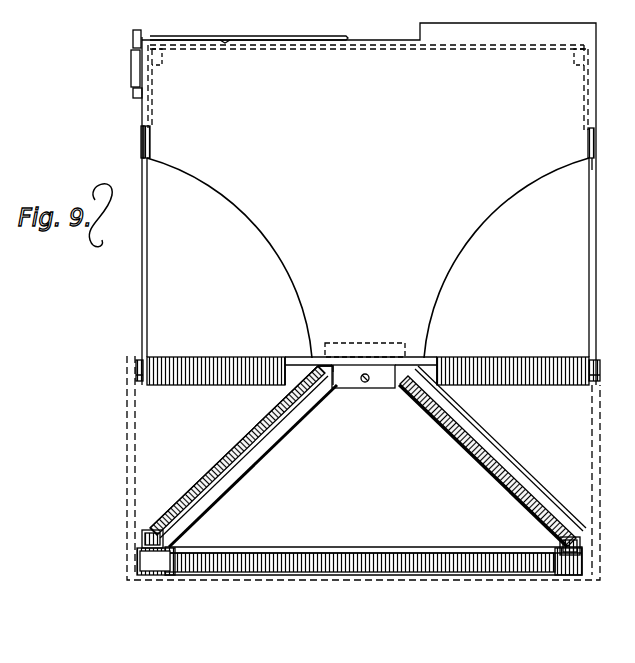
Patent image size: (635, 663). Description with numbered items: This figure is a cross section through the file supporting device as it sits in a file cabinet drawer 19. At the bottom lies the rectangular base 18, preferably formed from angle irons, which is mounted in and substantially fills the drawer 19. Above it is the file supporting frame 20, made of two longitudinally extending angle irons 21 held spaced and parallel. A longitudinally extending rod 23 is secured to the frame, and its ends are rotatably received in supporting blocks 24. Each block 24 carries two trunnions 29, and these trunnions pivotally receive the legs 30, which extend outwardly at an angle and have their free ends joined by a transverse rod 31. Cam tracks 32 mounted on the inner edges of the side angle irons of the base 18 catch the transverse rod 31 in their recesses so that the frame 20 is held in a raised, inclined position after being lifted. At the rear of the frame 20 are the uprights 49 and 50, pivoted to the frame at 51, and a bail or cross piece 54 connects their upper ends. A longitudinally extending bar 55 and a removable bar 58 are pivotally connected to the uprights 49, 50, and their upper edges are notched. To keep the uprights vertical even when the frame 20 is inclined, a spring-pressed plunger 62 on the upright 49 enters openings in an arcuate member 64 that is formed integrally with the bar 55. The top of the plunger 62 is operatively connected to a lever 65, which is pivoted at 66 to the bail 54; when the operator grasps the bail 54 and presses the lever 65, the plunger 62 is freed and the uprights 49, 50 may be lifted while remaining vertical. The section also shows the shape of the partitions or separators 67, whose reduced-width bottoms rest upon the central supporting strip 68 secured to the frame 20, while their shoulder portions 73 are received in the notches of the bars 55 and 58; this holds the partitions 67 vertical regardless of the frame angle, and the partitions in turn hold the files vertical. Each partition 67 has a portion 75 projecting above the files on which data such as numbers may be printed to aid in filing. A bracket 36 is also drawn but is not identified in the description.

The base 18 is at (158, 576).
The file cabinet drawer 19 is at (322, 581).
The file supporting frame 20 is at (438, 358).
The longitudinally extending angle irons 21 is at (300, 357).
The longitudinally extending rod 23 is at (363, 384).
The supporting blocks 24 is at (384, 374).
The trunnions 29 is at (319, 405).
The legs 30 is at (235, 482).
The transverse rod 31 is at (333, 553).
The cam tracks 32 is at (170, 548).
The side bracket 36 is at (135, 362).
The upright 49 is at (142, 291).
The upright 50 is at (596, 295).
The pivot 51 is at (138, 374).
The bail 54 is at (481, 48).
The longitudinally extending bar 55 is at (142, 146).
The removable bar 58 is at (594, 160).
The spring-pressed plunger 62 is at (133, 38).
The arcuate member 64 is at (136, 96).
The lever 65 is at (232, 37).
The pivot 66 is at (227, 40).
The partitions 67 is at (440, 273).
The central supporting strip 68 is at (341, 355).
The shoulder portions 73 is at (140, 128).
The portion 75 is at (592, 32).